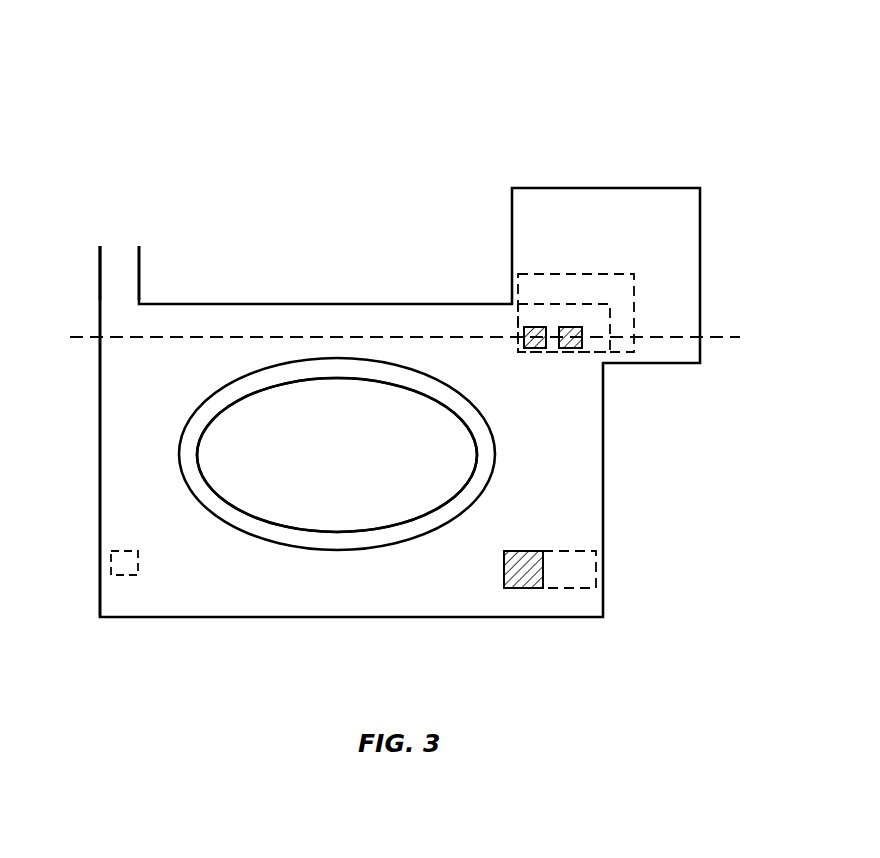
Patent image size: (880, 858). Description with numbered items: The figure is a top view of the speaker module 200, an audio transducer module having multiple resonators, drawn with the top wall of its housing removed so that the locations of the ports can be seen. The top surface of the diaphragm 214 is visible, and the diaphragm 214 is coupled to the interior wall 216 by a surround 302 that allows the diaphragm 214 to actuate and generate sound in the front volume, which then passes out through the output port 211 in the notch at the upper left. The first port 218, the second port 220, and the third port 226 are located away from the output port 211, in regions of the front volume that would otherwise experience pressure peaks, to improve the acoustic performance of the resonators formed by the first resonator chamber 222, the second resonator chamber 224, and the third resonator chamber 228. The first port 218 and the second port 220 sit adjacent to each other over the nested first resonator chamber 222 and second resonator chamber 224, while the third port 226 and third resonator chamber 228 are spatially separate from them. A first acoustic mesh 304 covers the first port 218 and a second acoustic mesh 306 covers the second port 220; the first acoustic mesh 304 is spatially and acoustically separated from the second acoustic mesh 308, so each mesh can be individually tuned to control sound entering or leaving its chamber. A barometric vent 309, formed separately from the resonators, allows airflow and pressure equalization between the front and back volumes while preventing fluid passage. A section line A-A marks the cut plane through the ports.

The speaker module 200 is at (486, 122).
The output port 211 is at (124, 250).
The interior wall 216 is at (127, 393).
The surround 302 is at (172, 467).
The diaphragm 214 is at (337, 455).
The section line A- A is at (74, 337).
The first resonator chamber 222 is at (615, 280).
The second resonator chamber 224 is at (573, 308).
The first port 218 is at (532, 325).
The first acoustic mesh 304 is at (533, 349).
The second acoustic mesh 306 is at (562, 349).
The second port 220 is at (573, 351).
The third port 226 is at (513, 592).
The second acoustic mesh 308 is at (522, 589).
The third resonator chamber 228 is at (576, 589).
The barometric vent 309 is at (118, 567).